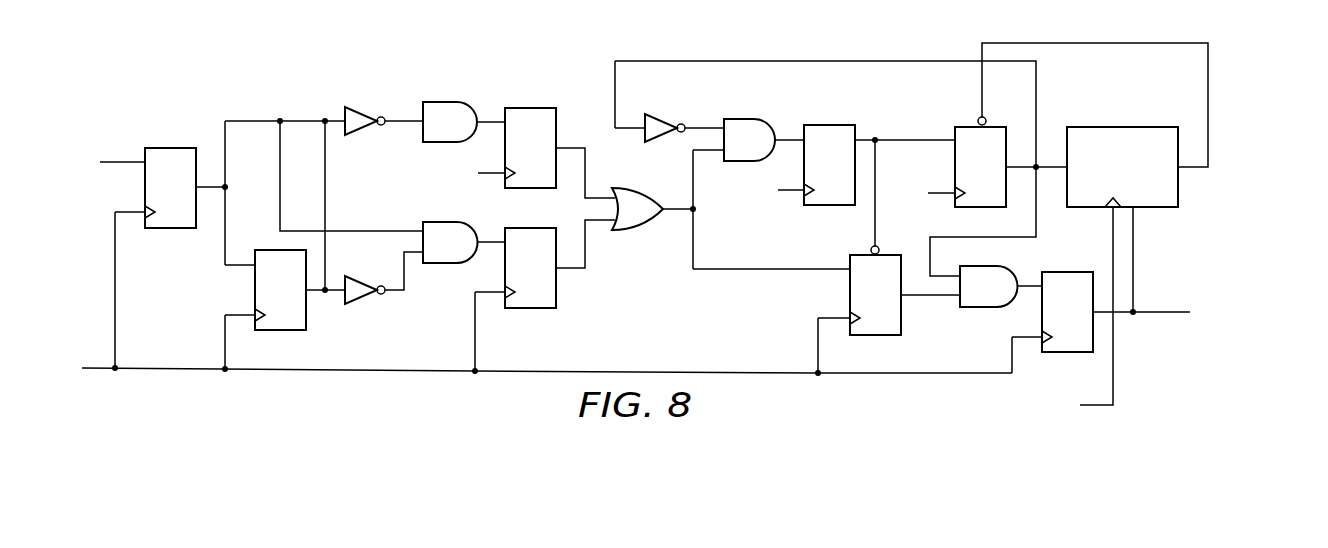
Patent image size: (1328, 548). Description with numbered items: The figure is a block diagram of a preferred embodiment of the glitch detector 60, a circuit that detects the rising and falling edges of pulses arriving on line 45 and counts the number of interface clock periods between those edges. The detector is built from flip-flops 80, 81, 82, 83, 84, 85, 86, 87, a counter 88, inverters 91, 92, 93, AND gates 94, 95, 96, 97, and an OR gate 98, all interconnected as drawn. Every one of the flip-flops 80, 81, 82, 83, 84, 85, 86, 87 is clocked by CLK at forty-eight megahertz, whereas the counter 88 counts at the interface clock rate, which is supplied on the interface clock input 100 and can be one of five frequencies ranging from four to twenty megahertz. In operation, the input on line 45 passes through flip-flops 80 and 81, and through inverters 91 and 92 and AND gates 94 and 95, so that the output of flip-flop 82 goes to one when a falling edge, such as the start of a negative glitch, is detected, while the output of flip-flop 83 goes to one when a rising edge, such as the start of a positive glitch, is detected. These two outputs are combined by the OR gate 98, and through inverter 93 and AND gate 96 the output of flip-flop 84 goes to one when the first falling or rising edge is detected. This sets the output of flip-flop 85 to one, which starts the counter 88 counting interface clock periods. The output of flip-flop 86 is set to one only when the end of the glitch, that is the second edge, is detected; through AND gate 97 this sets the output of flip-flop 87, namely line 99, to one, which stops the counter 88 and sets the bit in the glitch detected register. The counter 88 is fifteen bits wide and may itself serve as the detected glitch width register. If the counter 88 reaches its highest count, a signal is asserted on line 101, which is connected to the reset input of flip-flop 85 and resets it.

The glitch detector 60 is at (207, 60).
The line 45 is at (126, 162).
The flip-flop 80 is at (184, 201).
The flip-flop 81 is at (294, 303).
The flip-flop 82 is at (544, 161).
The flip-flop 83 is at (544, 281).
The flip-flop 84 is at (843, 178).
The flip-flop 85 is at (994, 180).
The flip-flop 86 is at (889, 308).
The flip-flop 87 is at (1081, 325).
The counter 88 is at (1122, 127).
The inverter 91 is at (360, 109).
The inverter 92 is at (363, 305).
The inverter 93 is at (660, 114).
The AND gate 94 is at (440, 102).
The AND gate 95 is at (440, 264).
The AND gate 96 is at (752, 119).
The AND gate 97 is at (978, 308).
The OR gate 98 is at (636, 231).
The line 99 is at (1157, 312).
The interface clock input 100 is at (1113, 368).
The line 101 is at (1210, 105).